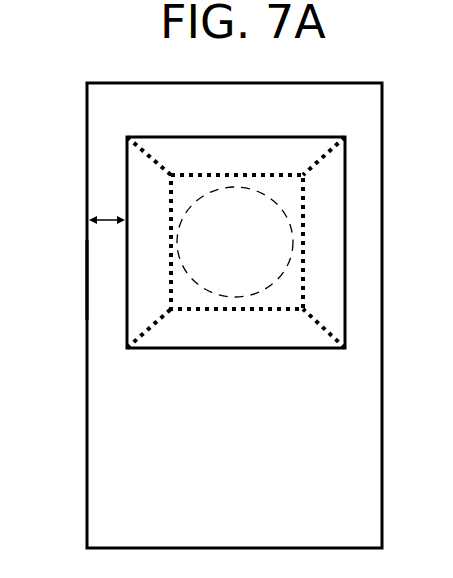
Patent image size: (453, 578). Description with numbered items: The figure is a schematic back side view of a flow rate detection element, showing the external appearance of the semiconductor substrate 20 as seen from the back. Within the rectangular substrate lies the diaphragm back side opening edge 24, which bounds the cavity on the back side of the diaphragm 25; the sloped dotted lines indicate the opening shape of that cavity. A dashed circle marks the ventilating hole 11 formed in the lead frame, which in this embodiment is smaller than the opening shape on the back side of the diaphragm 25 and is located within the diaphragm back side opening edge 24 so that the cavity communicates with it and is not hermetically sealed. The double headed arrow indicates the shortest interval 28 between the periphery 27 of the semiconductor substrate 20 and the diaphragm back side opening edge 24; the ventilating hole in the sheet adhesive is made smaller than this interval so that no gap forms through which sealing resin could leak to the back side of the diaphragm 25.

The ventilating hole 11 is at (283, 260).
The semiconductor substrate 20 is at (136, 517).
The diaphragm back side opening edge 24 is at (127, 177).
The diaphragm 25 is at (280, 175).
The periphery of the semiconductor substrate 27 is at (88, 281).
The shortest interval 28 is at (112, 210).